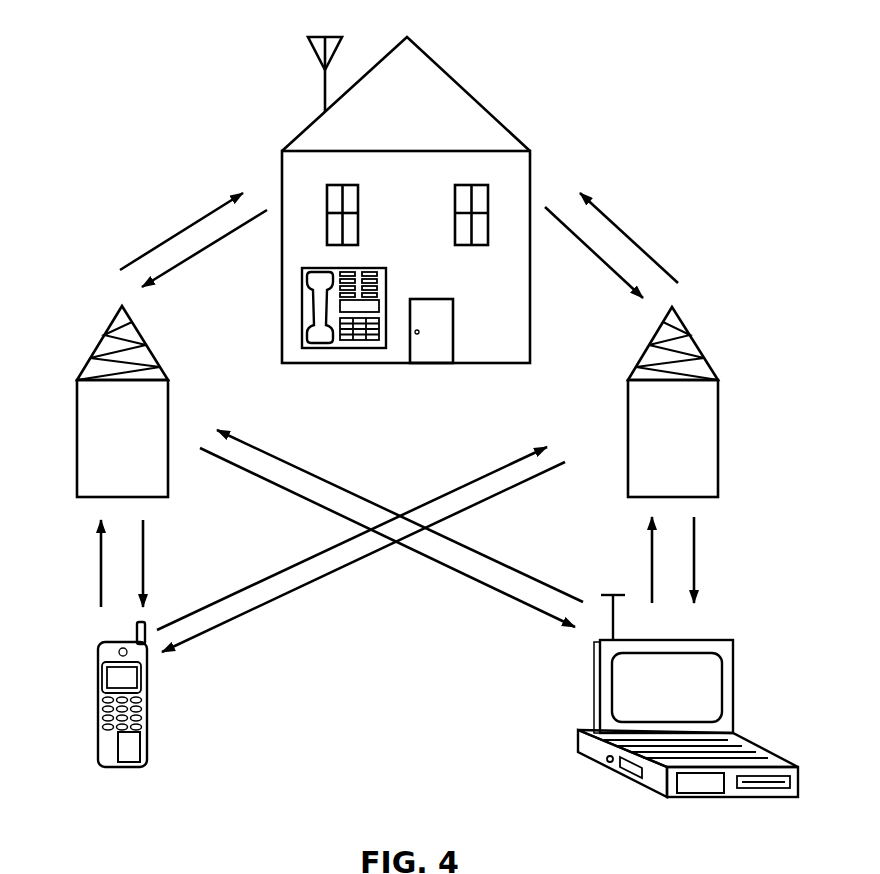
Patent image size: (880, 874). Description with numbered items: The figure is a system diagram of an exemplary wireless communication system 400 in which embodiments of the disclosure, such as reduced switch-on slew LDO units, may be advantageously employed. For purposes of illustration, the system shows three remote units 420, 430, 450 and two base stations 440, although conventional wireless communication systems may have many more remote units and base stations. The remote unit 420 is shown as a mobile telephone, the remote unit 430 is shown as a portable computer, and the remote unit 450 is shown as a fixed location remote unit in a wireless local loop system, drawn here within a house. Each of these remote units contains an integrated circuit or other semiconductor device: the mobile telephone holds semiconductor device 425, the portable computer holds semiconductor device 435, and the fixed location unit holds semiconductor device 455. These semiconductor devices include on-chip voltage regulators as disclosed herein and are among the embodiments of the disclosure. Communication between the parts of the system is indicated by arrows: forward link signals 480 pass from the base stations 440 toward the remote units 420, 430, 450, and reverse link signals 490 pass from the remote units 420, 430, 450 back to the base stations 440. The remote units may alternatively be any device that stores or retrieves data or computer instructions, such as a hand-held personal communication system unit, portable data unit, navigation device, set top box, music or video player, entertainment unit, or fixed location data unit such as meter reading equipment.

The wireless communication system 400 is at (136, 78).
The remote unit 420 is at (100, 652).
The integrated circuit or other semiconductor device 425 is at (130, 752).
The remote unit 430 is at (715, 640).
The integrated circuit or other semiconductor device 435 is at (705, 783).
The base station 440 is at (104, 336).
The remote unit 450 is at (302, 316).
The integrated circuit or other semiconductor device 455 is at (367, 307).
The forward link signals 480 is at (186, 228).
The reverse link signals 490 is at (192, 256).